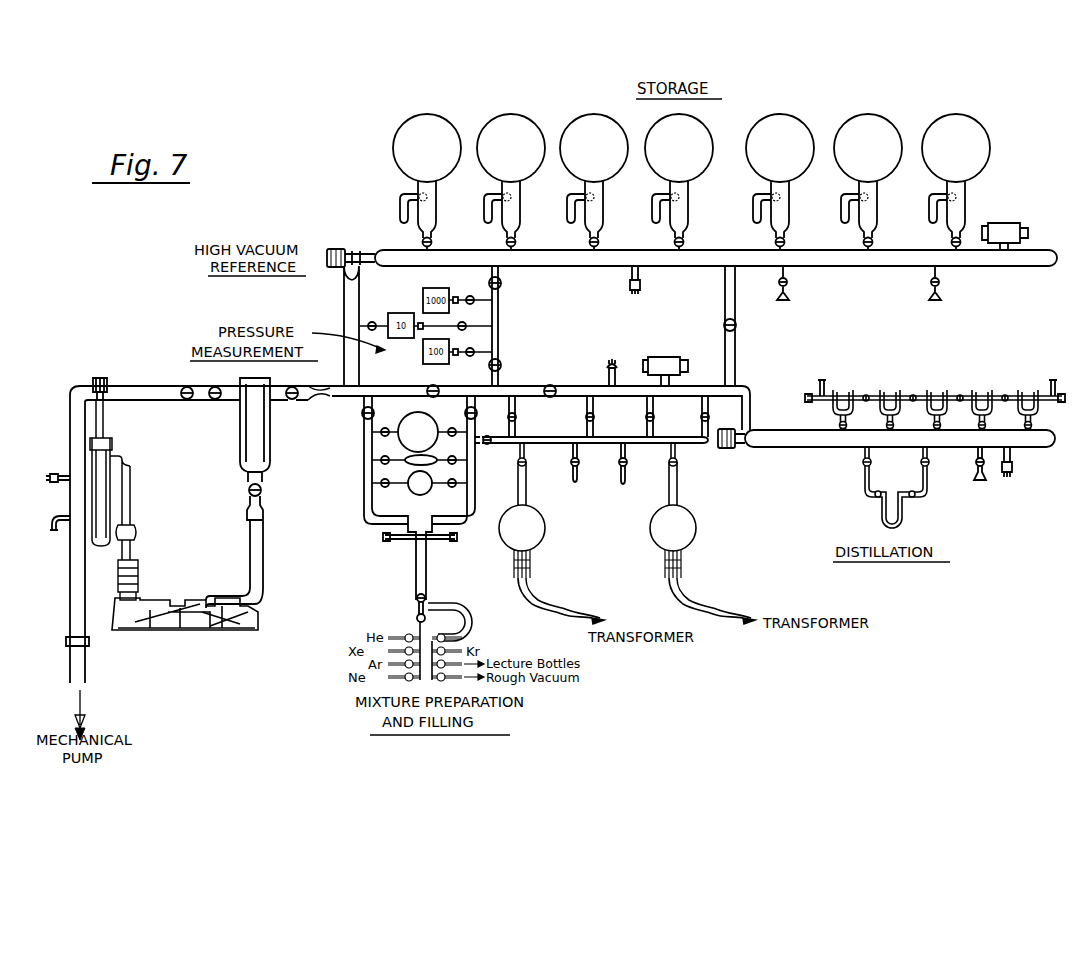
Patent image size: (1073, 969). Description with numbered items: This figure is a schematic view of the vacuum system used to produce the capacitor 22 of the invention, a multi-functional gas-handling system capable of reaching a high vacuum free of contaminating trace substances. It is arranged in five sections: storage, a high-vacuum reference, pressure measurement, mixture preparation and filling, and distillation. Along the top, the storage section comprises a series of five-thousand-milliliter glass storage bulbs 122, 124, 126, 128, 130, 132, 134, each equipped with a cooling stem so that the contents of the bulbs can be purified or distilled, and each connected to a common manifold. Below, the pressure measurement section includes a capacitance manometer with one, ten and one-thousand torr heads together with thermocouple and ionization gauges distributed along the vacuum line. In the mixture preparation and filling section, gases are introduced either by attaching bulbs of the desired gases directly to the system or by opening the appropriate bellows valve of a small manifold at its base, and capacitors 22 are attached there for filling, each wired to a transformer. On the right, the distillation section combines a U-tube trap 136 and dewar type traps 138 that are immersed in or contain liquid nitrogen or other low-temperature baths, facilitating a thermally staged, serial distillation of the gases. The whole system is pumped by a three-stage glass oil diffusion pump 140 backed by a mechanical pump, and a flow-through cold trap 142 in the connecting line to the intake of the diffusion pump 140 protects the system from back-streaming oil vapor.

The capacitor 22 is at (546, 529).
The glass storage bulb 122 is at (441, 158).
The glass storage bulb 124 is at (525, 158).
The glass storage bulb 126 is at (608, 158).
The glass storage bulb 128 is at (693, 158).
The glass storage bulb 130 is at (794, 158).
The glass storage bulb 132 is at (882, 158).
The glass storage bulb 134 is at (970, 158).
The U-tube trap 136 is at (912, 516).
The dewar type traps 138 is at (1026, 389).
The diffusion pump 140 is at (188, 636).
The flow-through cold trap 142 is at (272, 441).